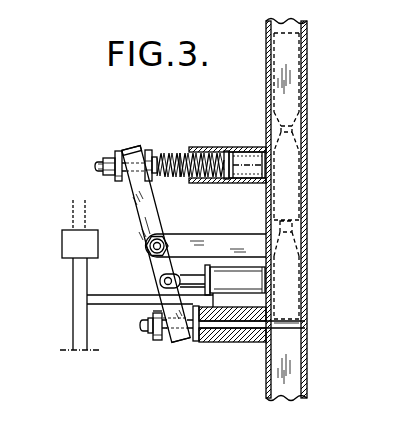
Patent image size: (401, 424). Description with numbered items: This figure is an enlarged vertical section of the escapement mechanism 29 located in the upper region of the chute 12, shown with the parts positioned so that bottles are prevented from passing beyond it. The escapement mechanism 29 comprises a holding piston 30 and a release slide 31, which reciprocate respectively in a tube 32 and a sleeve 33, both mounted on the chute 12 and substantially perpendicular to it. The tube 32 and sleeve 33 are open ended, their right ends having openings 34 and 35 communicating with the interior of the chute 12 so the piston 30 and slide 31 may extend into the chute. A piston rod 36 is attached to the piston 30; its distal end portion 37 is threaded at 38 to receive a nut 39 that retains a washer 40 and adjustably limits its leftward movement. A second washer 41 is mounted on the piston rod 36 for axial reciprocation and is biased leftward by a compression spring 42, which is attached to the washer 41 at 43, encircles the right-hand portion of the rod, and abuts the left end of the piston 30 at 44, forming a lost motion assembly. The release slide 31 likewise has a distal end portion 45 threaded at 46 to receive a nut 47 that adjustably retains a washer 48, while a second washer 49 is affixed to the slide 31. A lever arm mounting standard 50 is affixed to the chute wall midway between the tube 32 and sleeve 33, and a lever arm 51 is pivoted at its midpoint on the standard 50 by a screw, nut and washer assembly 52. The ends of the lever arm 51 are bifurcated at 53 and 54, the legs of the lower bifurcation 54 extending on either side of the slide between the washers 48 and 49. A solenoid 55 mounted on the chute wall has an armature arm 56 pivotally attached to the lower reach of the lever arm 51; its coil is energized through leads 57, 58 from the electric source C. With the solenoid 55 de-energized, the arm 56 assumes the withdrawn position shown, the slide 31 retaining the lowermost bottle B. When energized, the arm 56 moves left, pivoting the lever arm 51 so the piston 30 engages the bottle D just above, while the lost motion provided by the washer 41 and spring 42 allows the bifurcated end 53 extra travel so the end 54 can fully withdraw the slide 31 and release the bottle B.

The chute 12 is at (308, 123).
The escapement mechanism 29 is at (134, 217).
The holding piston 30 is at (246, 153).
The release slide 31 is at (248, 329).
The tube 32 is at (210, 148).
The sleeve 33 is at (222, 343).
The opening 34 is at (269, 154).
The opening 35 is at (270, 330).
The piston rod 36 is at (161, 180).
The distal end portion 37 is at (120, 178).
The threaded portion 38 is at (96, 167).
The nut 39 is at (111, 159).
The washer 40 is at (118, 151).
The second washer 41 is at (147, 150).
The compression spring 42 is at (179, 181).
The spring attachment point 43 is at (155, 157).
The spring abutment 44 is at (226, 151).
The distal end portion 45 is at (166, 346).
The threaded portion 46 is at (147, 333).
The nut 47 is at (158, 341).
The washer 48 is at (156, 312).
The second washer 49 is at (198, 343).
The lever arm mounting standard 50 is at (237, 240).
The lever arm 51 is at (149, 221).
The screw, nut and washer assembly 52 is at (150, 251).
The bifurcated end 53 is at (132, 150).
The bifurcated end 54 is at (181, 341).
The solenoid 55 is at (268, 284).
The armature arm 56 is at (192, 279).
The lead 57 is at (87, 330).
The lead 58 is at (73, 330).
The lowermost bottle B is at (292, 278).
The electric source C is at (80, 244).
The bottle D is at (292, 182).